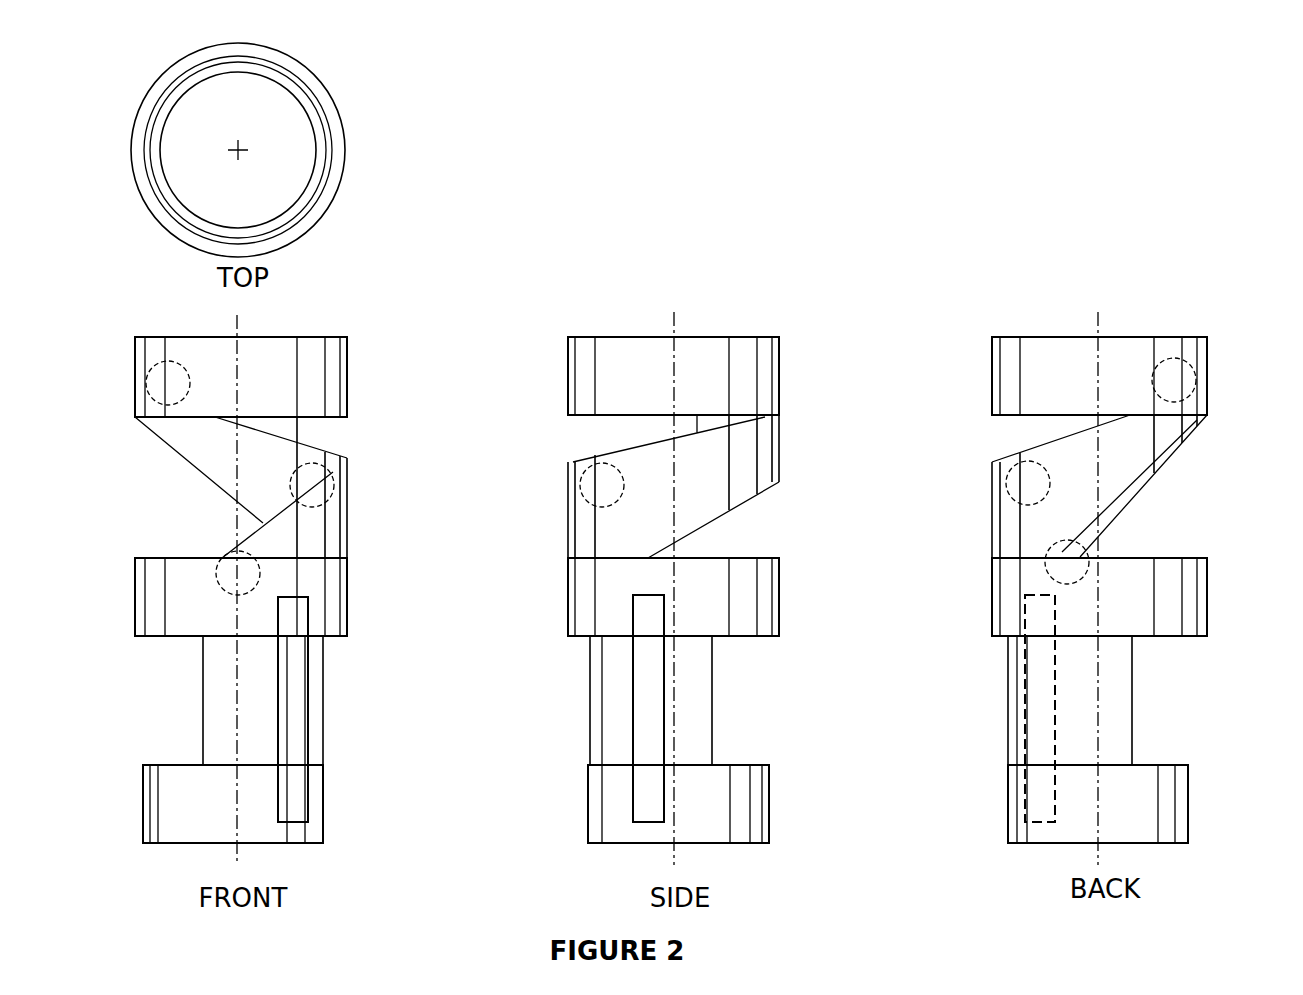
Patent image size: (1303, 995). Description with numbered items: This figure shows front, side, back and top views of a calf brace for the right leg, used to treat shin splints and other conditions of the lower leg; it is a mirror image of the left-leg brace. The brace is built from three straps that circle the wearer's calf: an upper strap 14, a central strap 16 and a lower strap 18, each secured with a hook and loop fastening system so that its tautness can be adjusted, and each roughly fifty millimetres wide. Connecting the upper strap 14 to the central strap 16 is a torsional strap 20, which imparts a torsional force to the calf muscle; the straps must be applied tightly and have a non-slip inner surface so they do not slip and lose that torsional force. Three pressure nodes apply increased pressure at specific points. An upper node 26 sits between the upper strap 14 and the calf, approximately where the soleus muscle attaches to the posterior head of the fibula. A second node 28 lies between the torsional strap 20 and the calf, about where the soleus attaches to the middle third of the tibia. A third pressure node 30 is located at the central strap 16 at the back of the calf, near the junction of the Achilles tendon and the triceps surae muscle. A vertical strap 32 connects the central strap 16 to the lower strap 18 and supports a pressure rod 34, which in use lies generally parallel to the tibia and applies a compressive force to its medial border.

The upper strap 14 is at (322, 358).
The central strap 16 is at (335, 590).
The lower strap 18 is at (177, 800).
The torsional strap 20 is at (200, 437).
The upper node 26 is at (150, 363).
The second node 28 is at (580, 480).
The third pressure node 30 is at (227, 582).
The vertical strap 32 is at (223, 698).
The pressure rod 34 is at (298, 735).